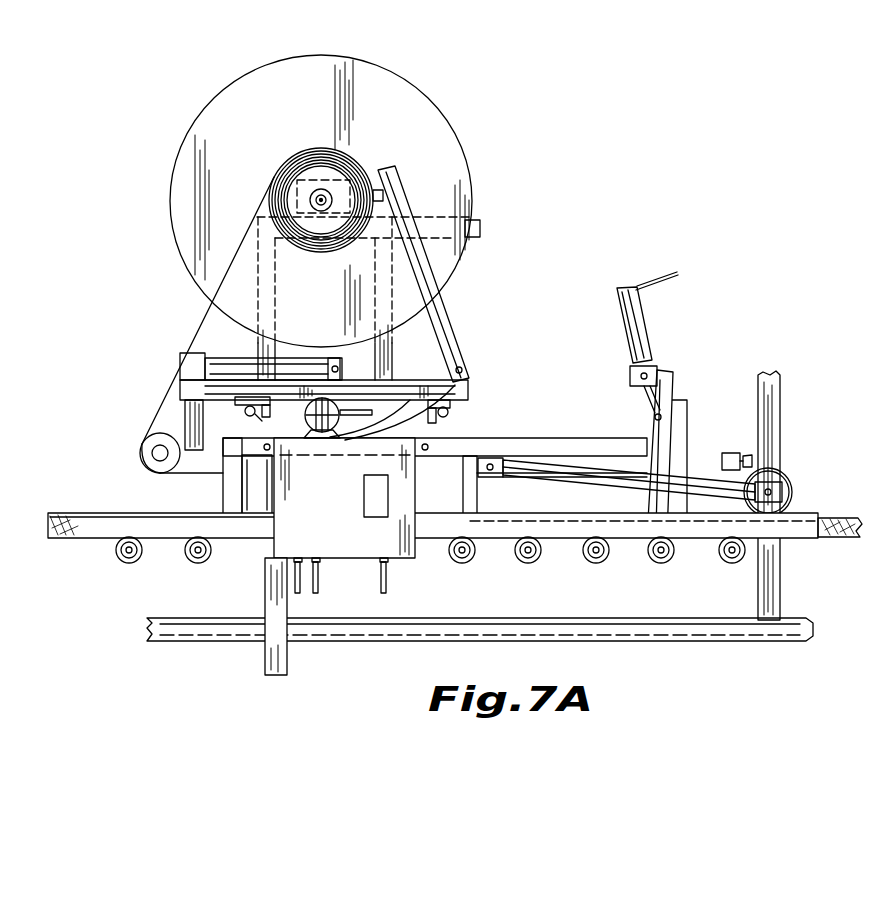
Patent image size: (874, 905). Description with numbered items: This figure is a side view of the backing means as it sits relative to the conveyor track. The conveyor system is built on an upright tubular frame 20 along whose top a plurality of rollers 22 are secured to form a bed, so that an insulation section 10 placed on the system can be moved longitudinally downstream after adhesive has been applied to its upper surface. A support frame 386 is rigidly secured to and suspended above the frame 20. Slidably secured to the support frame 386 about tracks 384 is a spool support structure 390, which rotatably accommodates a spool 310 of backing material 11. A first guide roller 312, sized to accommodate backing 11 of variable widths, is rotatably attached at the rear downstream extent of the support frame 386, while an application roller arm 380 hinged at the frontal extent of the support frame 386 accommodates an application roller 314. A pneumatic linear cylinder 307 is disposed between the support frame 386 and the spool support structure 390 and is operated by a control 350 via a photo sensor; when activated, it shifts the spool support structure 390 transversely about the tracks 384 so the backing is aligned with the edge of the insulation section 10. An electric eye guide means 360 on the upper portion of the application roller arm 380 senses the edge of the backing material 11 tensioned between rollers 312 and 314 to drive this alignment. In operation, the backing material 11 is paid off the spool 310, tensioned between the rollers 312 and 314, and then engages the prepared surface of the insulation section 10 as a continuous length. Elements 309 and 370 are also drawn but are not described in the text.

The spool 310 is at (413, 83).
The backing material 11 is at (208, 308).
The spool support structure 390 is at (408, 380).
The guide 309 is at (410, 400).
The pneumatic linear cylinder 307 is at (455, 385).
The support frame 386 is at (467, 447).
The lever 370 is at (647, 323).
The application roller arm 380 is at (698, 463).
The electric eye guide means 360 is at (737, 452).
The application roller 314 is at (793, 488).
The tracks 384 is at (248, 408).
The first guide roller 312 is at (140, 453).
The control 350 is at (397, 545).
The rollers 22 is at (596, 563).
The upright tubular frame 20 is at (612, 641).
The insulation section 10 is at (850, 540).